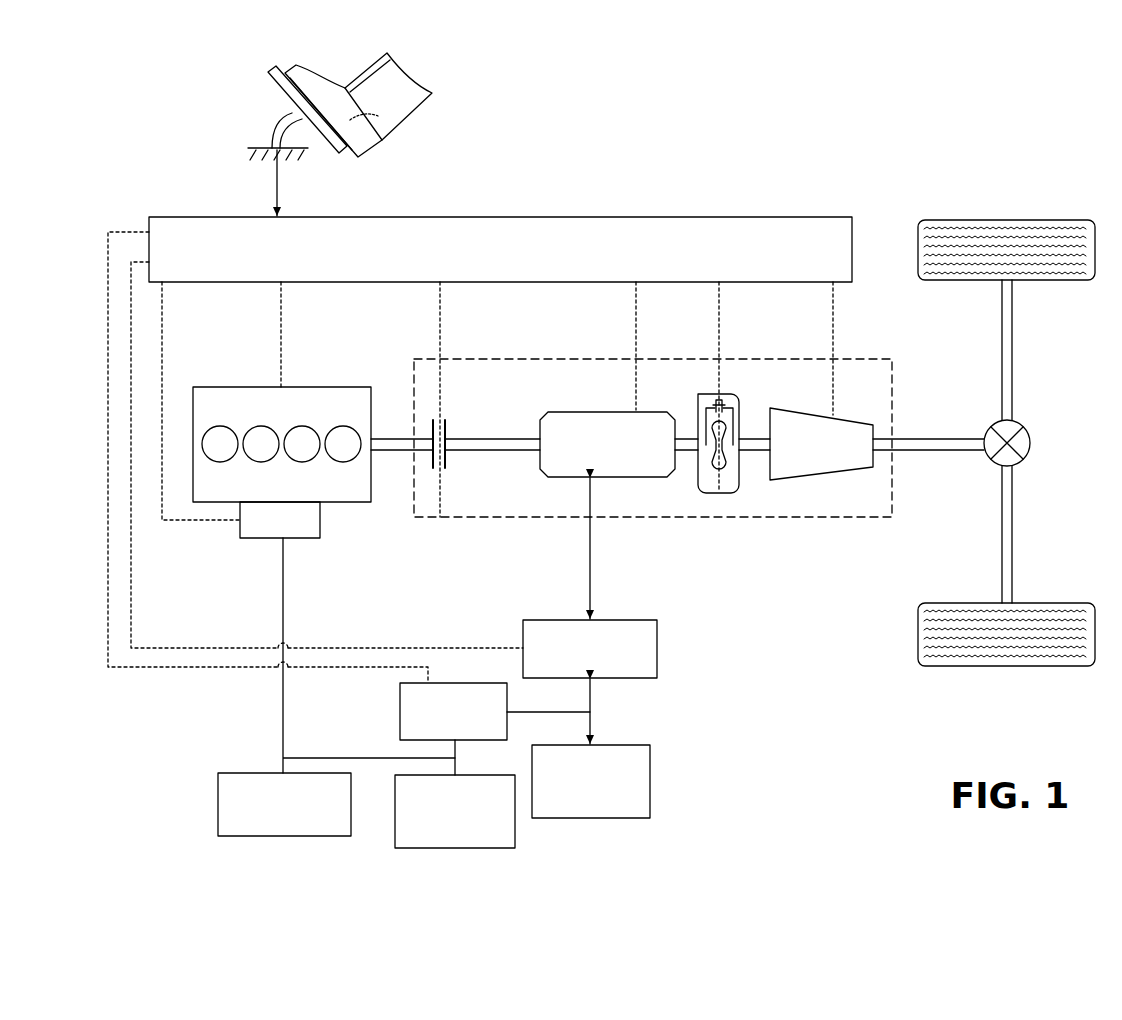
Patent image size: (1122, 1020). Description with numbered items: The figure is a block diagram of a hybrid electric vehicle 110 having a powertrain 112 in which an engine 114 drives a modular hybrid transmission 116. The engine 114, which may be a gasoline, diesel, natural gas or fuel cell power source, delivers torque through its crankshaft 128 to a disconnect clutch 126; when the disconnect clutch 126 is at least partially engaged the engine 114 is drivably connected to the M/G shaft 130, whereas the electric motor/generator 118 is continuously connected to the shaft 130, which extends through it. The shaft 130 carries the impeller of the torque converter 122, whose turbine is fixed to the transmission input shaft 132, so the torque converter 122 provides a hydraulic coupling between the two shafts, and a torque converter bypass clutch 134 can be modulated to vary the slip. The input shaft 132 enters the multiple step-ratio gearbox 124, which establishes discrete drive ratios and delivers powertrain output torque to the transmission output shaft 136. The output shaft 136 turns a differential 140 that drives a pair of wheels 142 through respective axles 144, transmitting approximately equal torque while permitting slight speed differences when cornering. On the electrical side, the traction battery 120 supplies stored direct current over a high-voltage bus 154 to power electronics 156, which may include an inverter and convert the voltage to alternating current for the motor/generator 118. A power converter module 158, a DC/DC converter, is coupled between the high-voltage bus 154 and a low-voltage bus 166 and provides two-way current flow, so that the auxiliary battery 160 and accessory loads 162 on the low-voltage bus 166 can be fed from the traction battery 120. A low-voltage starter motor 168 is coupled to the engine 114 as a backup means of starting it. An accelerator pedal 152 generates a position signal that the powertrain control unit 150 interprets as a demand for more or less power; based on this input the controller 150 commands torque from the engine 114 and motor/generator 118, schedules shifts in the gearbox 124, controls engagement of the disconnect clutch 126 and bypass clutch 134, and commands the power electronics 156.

The hybrid electric vehicle 110 is at (880, 98).
The powertrain 112 is at (810, 676).
The engine 114 is at (237, 387).
The transmission 116 is at (688, 359).
The electric motor/generator (M/G) 118 is at (592, 412).
The traction battery 120 is at (650, 785).
The torque converter 122 is at (715, 494).
The gearbox 124 is at (822, 480).
The disconnect clutch 126 is at (450, 458).
The crankshaft 128 is at (401, 437).
The M/G shaft 130 is at (457, 438).
The transmission input shaft 132 is at (750, 438).
The torque converter bypass clutch 134 is at (725, 405).
The transmission output shaft 136 is at (952, 438).
The differential 140 is at (1032, 448).
The wheels 142 is at (1007, 220).
The axles 144 is at (1015, 357).
The powertrain control unit (PCU) 150 is at (553, 217).
The accelerator pedal 152 is at (290, 103).
The high-voltage bus 154 is at (590, 716).
The power electronics 156 is at (657, 648).
The power converter module 158 is at (400, 712).
The auxiliary battery 160 is at (395, 812).
The accessory loads 162 is at (218, 805).
The low-voltage bus 166 is at (283, 722).
The low-voltage starter motor 168 is at (283, 540).